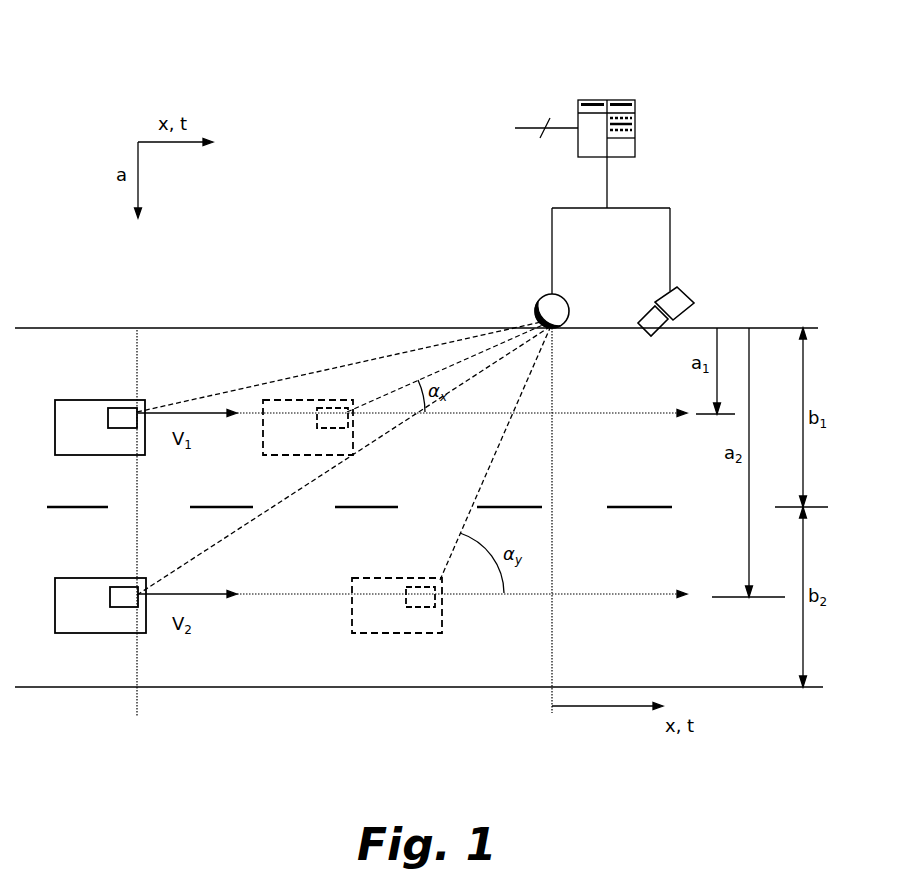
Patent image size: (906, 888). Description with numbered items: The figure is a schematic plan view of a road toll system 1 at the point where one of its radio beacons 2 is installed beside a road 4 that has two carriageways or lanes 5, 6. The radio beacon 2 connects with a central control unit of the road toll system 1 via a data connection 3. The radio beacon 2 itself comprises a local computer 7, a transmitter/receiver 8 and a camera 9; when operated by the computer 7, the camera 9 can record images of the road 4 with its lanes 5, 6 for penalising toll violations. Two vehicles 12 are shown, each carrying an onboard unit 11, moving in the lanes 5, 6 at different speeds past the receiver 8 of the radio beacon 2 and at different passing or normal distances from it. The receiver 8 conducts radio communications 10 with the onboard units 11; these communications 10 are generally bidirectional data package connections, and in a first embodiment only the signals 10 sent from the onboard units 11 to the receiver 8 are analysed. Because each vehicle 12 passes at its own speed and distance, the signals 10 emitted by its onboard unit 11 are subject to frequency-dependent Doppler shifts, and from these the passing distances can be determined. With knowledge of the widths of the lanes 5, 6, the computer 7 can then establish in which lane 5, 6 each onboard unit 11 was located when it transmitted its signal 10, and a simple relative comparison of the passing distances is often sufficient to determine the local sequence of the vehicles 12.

The road toll system 1 is at (70, 33).
The radio beacon 2 is at (726, 139).
The data connection 3 is at (530, 125).
The road 4 is at (74, 717).
The lane 5 is at (243, 342).
The lane 6 is at (270, 680).
The local computer 7 is at (630, 145).
The transmitter/receiver 8 is at (552, 312).
The camera 9 is at (676, 302).
The radio communications 10 is at (527, 377).
The onboard unit 11 is at (123, 415).
The vehicle 12 is at (92, 445).